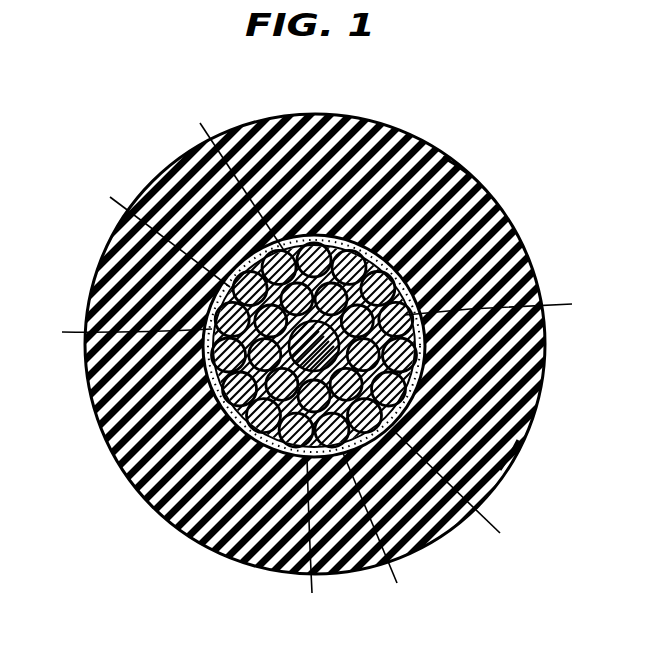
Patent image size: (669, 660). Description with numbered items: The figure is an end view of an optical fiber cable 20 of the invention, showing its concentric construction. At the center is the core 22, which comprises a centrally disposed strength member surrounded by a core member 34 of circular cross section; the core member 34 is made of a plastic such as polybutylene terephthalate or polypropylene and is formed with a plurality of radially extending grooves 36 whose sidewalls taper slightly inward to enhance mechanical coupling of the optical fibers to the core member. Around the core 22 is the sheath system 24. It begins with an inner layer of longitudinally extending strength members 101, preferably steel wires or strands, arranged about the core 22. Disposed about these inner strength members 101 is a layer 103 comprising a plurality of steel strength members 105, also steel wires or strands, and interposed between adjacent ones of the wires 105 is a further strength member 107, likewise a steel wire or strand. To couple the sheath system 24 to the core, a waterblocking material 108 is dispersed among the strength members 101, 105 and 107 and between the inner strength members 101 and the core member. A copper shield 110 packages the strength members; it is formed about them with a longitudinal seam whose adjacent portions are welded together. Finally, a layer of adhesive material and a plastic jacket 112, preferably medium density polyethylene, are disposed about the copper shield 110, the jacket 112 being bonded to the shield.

The optical fiber cable 20 is at (334, 86).
The core 22 is at (488, 198).
The sheath system 24 is at (527, 253).
The core member 34 is at (310, 542).
The grooves 36 is at (380, 535).
The strength members 101 is at (443, 157).
The layer 103 is at (232, 176).
The steel strength members 105 is at (509, 307).
The strength member 107 is at (465, 494).
The waterblocking material 108 is at (151, 229).
The copper shield 110 is at (113, 333).
The plastic jacket 112 is at (518, 439).